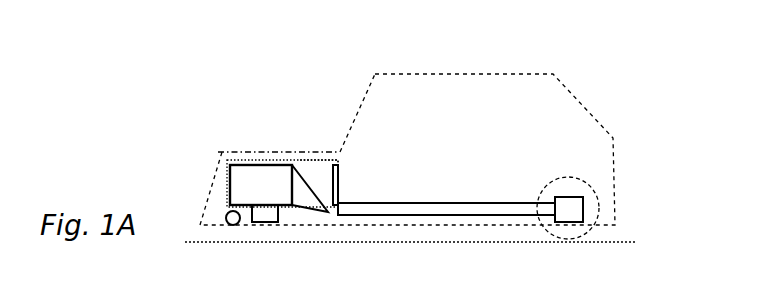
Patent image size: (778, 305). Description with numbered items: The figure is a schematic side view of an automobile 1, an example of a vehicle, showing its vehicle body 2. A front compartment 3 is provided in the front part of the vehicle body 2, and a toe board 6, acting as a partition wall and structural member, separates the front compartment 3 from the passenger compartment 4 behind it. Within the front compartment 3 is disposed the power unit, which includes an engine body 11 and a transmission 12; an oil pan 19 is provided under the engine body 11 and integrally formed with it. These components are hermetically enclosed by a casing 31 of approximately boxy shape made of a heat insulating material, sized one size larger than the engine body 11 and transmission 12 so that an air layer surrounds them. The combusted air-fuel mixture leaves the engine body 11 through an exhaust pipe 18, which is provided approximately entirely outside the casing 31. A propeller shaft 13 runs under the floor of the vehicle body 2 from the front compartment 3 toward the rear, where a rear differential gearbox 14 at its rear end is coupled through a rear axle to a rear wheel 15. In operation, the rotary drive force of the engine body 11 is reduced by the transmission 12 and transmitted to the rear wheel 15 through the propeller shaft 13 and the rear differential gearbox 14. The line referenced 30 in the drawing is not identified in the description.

The automobile 1 is at (267, 68).
The vehicle body 2 is at (344, 148).
The front compartment 3 is at (287, 151).
The casing 31 is at (315, 159).
The passenger compartment 4 is at (476, 90).
The toe board 6 is at (336, 156).
The front panel 30 is at (228, 152).
The engine body 11 is at (255, 176).
The transmission 12 is at (320, 213).
The propeller shaft 13 is at (406, 216).
The rear differential gearbox 14 is at (572, 212).
The rear wheel 15 is at (548, 235).
The exhaust pipe 18 is at (235, 230).
The oil pan 19 is at (265, 224).